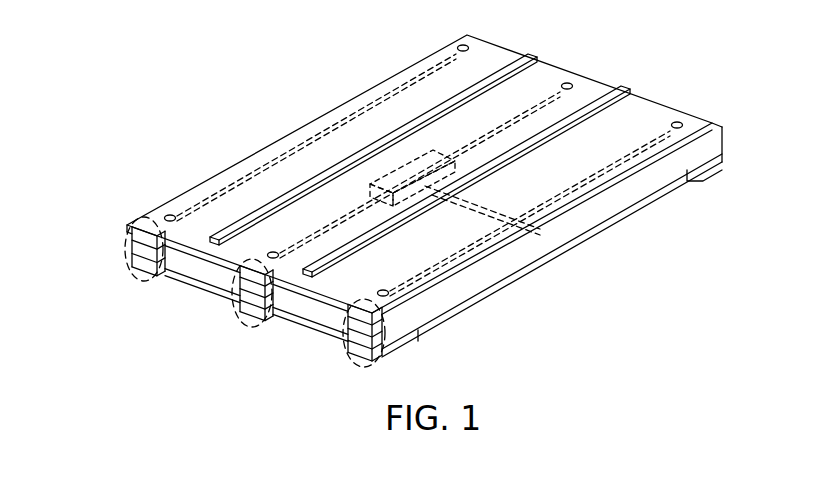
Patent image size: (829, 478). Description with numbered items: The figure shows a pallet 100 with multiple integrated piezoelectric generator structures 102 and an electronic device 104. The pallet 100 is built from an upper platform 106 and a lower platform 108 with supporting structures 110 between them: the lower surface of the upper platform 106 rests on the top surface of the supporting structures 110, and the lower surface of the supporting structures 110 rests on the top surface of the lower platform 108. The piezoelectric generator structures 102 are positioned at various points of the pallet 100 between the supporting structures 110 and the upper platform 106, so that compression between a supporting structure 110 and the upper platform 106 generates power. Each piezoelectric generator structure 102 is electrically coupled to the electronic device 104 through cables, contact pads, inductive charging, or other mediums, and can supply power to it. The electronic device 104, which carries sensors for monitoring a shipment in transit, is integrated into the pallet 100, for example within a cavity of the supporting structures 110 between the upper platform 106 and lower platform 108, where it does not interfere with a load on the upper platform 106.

The pallet 100 is at (168, 60).
The piezoelectric generator structure 102 is at (463, 48).
The electronic device 104 is at (448, 166).
The upper platform 106 is at (345, 100).
The lower platform 108 is at (298, 328).
The supporting structure 110 is at (378, 358).